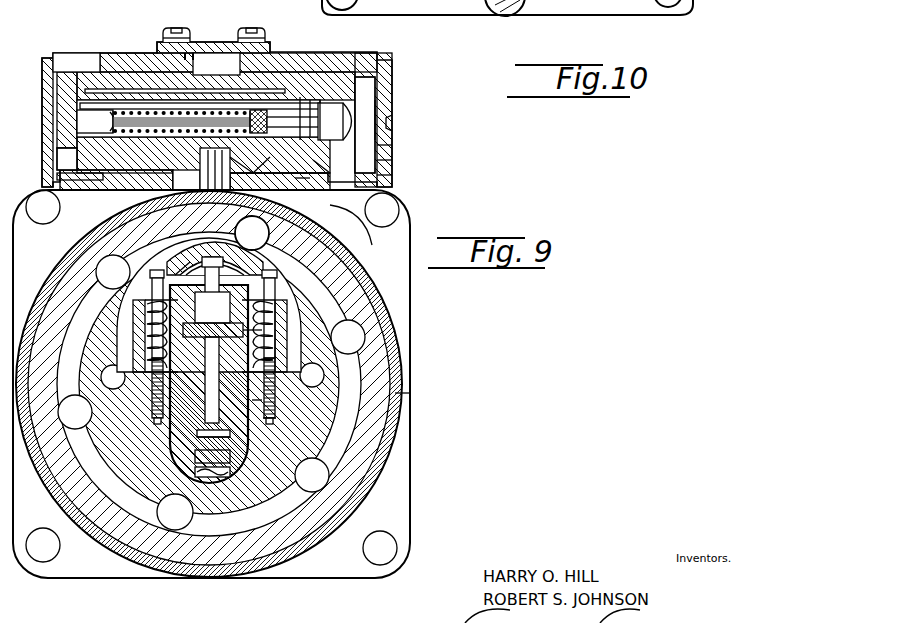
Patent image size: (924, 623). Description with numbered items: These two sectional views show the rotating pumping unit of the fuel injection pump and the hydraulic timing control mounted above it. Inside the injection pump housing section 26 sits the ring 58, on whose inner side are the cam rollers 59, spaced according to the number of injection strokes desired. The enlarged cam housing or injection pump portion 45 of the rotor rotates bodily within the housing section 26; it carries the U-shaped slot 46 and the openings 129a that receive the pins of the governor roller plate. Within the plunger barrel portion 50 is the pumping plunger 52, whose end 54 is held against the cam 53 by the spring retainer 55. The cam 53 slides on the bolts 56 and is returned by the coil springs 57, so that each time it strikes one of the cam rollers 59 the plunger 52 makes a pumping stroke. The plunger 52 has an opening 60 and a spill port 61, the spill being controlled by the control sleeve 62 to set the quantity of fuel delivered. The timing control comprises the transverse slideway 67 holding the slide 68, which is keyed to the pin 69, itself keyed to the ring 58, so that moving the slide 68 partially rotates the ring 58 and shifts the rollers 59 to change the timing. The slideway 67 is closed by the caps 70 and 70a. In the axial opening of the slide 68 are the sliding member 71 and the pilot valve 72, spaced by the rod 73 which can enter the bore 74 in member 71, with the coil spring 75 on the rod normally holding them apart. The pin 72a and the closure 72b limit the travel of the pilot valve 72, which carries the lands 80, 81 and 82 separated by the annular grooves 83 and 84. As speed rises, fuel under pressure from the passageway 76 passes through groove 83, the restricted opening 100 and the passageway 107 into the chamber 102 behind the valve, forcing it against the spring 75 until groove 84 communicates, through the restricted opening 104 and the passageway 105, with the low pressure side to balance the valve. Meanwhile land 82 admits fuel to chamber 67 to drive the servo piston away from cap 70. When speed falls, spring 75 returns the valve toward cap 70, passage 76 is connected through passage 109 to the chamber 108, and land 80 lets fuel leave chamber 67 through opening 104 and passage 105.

In FIG. 9, the injection pump housing section 26 is at (406, 467).
In FIG. 9, the cam housing or injection pump portion 45 is at (400, 393).
In FIG. 9, the U-shaped slot 46 is at (255, 421).
In FIG. 9, the plunger barrel portion 50 is at (168, 483).
In FIG. 9, the pumping plunger 52 is at (168, 450).
In FIG. 9, the cam 53 is at (235, 258).
In FIG. 9, the plunger end 54 is at (200, 257).
In FIG. 9, the spring retainer 55 is at (187, 258).
In FIG. 9, the bolts 56 is at (152, 270).
In FIG. 9, the coil springs 57 is at (133, 344).
In FIG. 9, the ring 58 is at (406, 317).
In FIG. 9, the cam rollers 59 is at (75, 410).
In FIG. 9, the opening 60 is at (240, 428).
In FIG. 9, the spill port 61 is at (232, 338).
In FIG. 9, the control sleeve 62 is at (232, 300).
In FIG. 10, the transverse slideway 67 is at (378, 107).
In FIG. 10, the slide 68 is at (358, 88).
In FIG. 9, the pin 69 is at (252, 233).
In FIG. 10, the cap 70 is at (43, 160).
In FIG. 10, the cap 70a is at (387, 147).
In FIG. 10, the sliding member 71 is at (83, 118).
In FIG. 10, the pilot valve 72 is at (318, 100).
In FIG. 10, the pin 72a is at (230, 107).
In FIG. 10, the closure 72b is at (355, 127).
In FIG. 10, the rod 73 is at (123, 117).
In FIG. 10, the bore 74 is at (85, 98).
In FIG. 10, the coil spring 75 is at (137, 113).
In FIG. 10, the passageway 76 is at (277, 167).
In FIG. 10, the land portion 80 is at (383, 170).
In FIG. 10, the land portion 81 is at (300, 178).
In FIG. 10, the land portion 82 is at (201, 170).
In FIG. 10, the annular groove 83 is at (210, 100).
In FIG. 10, the annular groove 84 is at (300, 97).
In FIG. 10, the restricted opening 100 is at (278, 97).
In FIG. 10, the chamber 102 is at (380, 157).
In FIG. 9, the restricted opening 104 is at (363, 233).
In FIG. 10, the passageway 105 is at (313, 160).
In FIG. 10, the passageway 107 is at (338, 100).
In FIG. 10, the chamber 108 is at (63, 150).
In FIG. 10, the passage 109 is at (88, 68).
In FIG. 9, the openings 129a is at (95, 414).